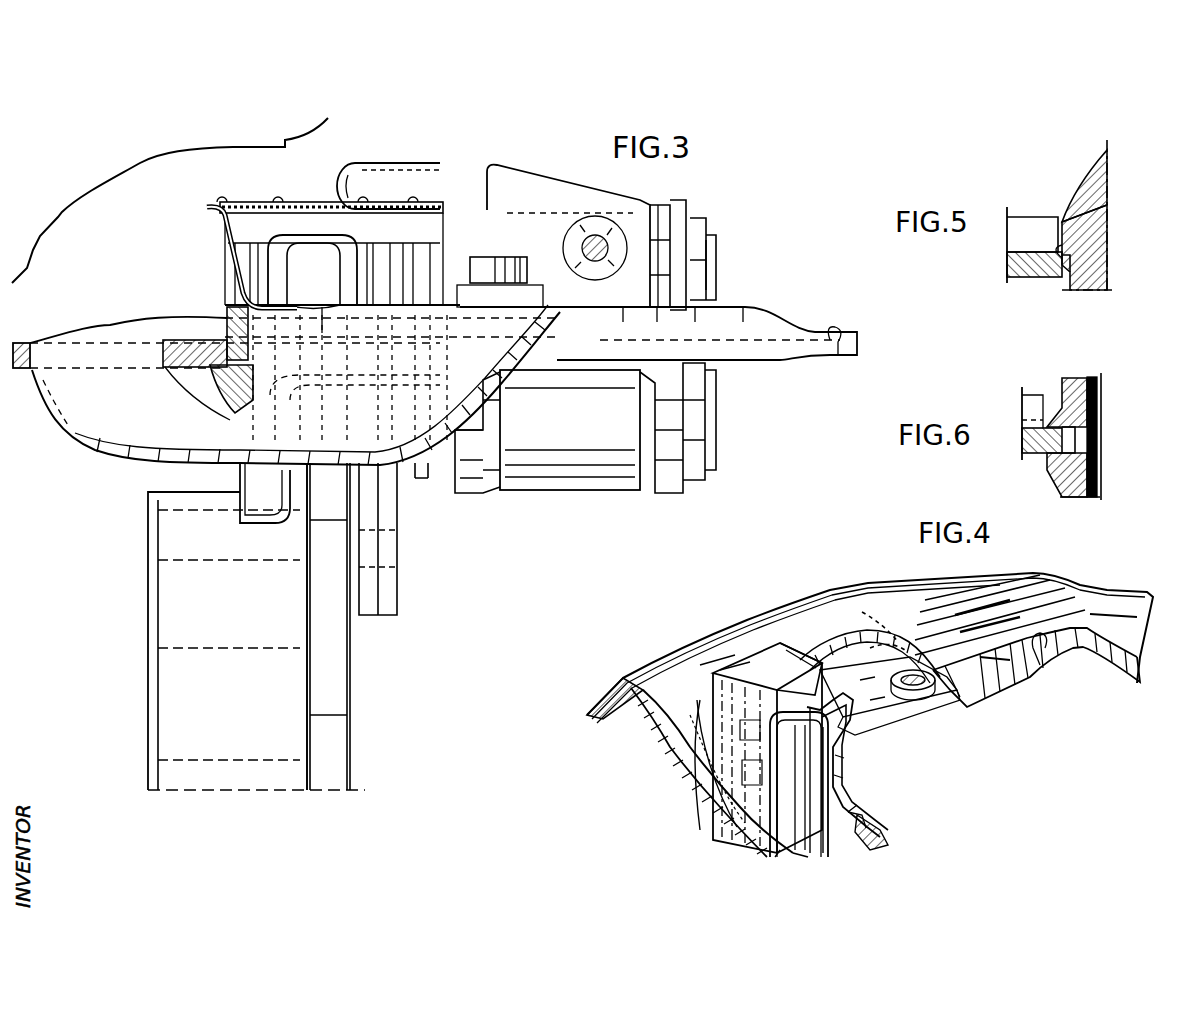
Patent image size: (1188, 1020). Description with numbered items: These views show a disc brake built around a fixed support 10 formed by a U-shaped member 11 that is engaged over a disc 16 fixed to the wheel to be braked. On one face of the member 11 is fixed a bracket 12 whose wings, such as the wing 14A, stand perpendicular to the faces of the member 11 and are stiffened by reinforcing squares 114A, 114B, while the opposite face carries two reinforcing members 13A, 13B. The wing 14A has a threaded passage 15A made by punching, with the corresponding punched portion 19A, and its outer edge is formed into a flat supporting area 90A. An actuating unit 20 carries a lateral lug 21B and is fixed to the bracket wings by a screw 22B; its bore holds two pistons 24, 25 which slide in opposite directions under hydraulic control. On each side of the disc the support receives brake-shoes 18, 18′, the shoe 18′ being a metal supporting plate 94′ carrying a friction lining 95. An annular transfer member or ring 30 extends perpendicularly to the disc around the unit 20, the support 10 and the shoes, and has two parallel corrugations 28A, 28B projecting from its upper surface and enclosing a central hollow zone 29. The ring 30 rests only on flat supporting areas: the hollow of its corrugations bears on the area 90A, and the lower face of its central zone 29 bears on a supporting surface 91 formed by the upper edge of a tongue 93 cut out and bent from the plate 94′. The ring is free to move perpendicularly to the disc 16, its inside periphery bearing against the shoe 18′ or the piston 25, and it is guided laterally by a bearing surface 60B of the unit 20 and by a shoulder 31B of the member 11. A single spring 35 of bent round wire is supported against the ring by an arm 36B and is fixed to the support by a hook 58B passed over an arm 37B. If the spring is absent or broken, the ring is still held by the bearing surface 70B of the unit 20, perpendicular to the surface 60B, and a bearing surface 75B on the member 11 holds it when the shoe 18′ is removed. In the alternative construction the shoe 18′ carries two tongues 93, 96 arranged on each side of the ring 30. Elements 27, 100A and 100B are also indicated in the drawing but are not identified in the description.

In FIG. 3, the fixed support 10 is at (394, 616).
In FIG. 4, the fixed support 10 is at (890, 835).
In FIG. 3, the U-shaped member 11 is at (363, 593).
In FIG. 4, the U-shaped member 11 is at (795, 697).
In FIG. 3, the bracket 12 is at (393, 583).
In FIG. 4, the bracket 12 is at (848, 770).
In FIG. 4, the reinforcing member 13A is at (735, 770).
In FIG. 3, the reinforcing member 13B is at (263, 472).
In FIG. 4, the wing 14A is at (908, 700).
In FIG. 4, the threaded passage 15A is at (918, 692).
In FIG. 3, the disc 16 is at (358, 702).
In FIG. 3, the brake-shoe 18 is at (465, 497).
In FIG. 3, the brake-shoe 18′ is at (223, 283).
In FIG. 6, the brake-shoe 18′ is at (1100, 390).
In FIG. 4, the punched portion 19A is at (925, 645).
In FIG. 3, the actuating unit 20 is at (700, 207).
In FIG. 5, the actuating unit 20 is at (1083, 175).
In FIG. 5, the lug 21B is at (1025, 217).
In FIG. 3, the screw 22B is at (527, 262).
In FIG. 3, the piston 24 is at (413, 295).
In FIG. 3, the piston 25 is at (716, 255).
In FIG. 3, the clip 27 is at (402, 223).
In FIG. 4, the corrugation 28A is at (985, 585).
In FIG. 3, the corrugation 28B is at (173, 320).
In FIG. 3, the central hollow zone 29 is at (165, 340).
In FIG. 4, the central hollow zone 29 is at (760, 823).
In FIG. 3, the transfer member 30 is at (92, 332).
In FIG. 5, the transfer member 30 is at (1022, 283).
In FIG. 6, the transfer member 30 is at (1032, 455).
In FIG. 4, the transfer member 30 is at (878, 586).
In FIG. 3, the shoulder 31B is at (363, 280).
In FIG. 3, the spring 35 is at (213, 238).
In FIG. 3, the arm 36B is at (324, 336).
In FIG. 3, the arm 37B is at (293, 200).
In FIG. 3, the hook 58B is at (220, 198).
In FIG. 5, the bearing surface 60B is at (1070, 262).
In FIG. 5, the bearing surface 70B is at (1100, 205).
In FIG. 3, the bearing surface 75B is at (315, 276).
In FIG. 4, the supporting area 90A is at (870, 623).
In FIG. 3, the supporting surface 91 is at (215, 370).
In FIG. 3, the tongue 93 is at (228, 395).
In FIG. 6, the tongue 93 is at (1062, 470).
In FIG. 3, the metal supporting plate 94′ is at (217, 335).
In FIG. 3, the friction lining 95 is at (240, 410).
In FIG. 6, the tongue 96 is at (1060, 412).
In FIG. 4, the hood skin 100A is at (590, 718).
In FIG. 3, the motor 100B is at (477, 375).
In FIG. 4, the reinforcing square 114A is at (790, 640).
In FIG. 3, the reinforcing square 114B is at (400, 227).